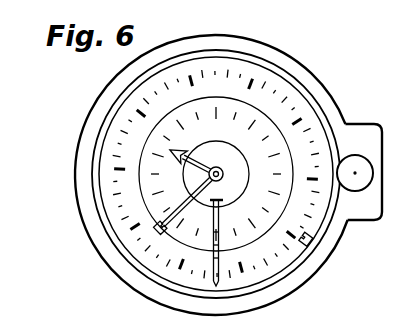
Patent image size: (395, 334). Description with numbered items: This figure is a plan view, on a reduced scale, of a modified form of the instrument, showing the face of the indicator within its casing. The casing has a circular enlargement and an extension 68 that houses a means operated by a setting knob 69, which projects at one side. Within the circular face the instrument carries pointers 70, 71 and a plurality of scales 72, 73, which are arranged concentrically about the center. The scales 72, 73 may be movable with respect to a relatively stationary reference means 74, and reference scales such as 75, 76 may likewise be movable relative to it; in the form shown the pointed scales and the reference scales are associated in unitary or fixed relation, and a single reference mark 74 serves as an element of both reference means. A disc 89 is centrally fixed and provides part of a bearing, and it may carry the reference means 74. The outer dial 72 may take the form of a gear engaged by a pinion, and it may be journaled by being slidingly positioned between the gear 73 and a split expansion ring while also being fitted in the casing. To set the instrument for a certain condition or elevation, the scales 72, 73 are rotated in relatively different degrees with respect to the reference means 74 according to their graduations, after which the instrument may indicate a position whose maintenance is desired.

The extension 68 is at (352, 143).
The setting knob 69 is at (358, 170).
The pointer 70 is at (157, 232).
The pointer 71 is at (186, 158).
The outer dial 72 is at (275, 227).
The scale 73 is at (170, 187).
The reference means 74 is at (221, 285).
The reference scale 75 is at (308, 243).
The reference scale 76 is at (147, 143).
The disc 89 is at (240, 170).